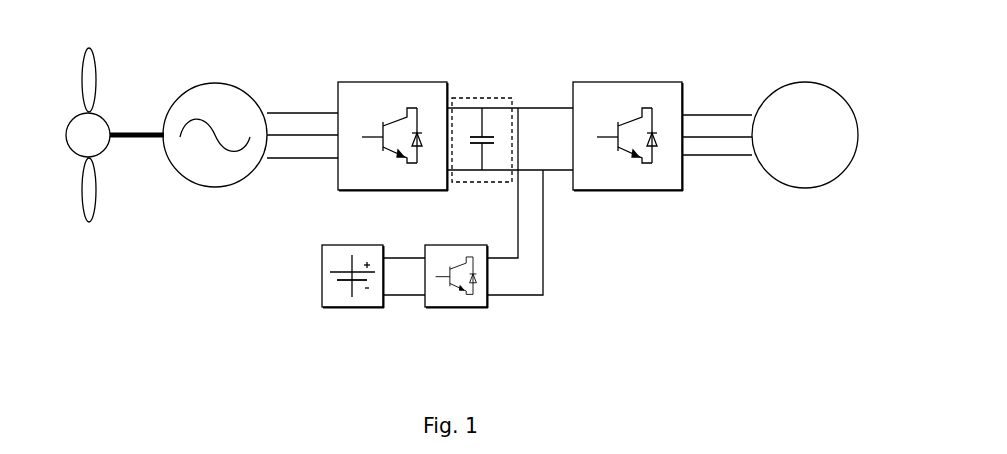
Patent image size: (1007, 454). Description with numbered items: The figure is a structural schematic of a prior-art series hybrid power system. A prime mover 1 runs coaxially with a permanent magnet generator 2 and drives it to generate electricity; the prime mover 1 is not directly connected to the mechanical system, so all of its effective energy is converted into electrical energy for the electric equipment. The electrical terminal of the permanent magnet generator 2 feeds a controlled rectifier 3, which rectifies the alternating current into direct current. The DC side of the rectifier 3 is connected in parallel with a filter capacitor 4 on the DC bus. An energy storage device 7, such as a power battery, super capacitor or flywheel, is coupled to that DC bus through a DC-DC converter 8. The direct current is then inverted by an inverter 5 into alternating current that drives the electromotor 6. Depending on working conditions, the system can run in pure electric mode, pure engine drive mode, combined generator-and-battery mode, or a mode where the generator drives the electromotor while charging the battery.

The prime mover 1 is at (103, 110).
The permanent magnet generator 2 is at (225, 80).
The rectifier 3 is at (368, 80).
The filter capacitor 4 is at (500, 98).
The inverter 5 is at (615, 80).
The electromotor 6 is at (823, 82).
The energy storage device 7 is at (320, 298).
The DC-DC converter 8 is at (487, 305).